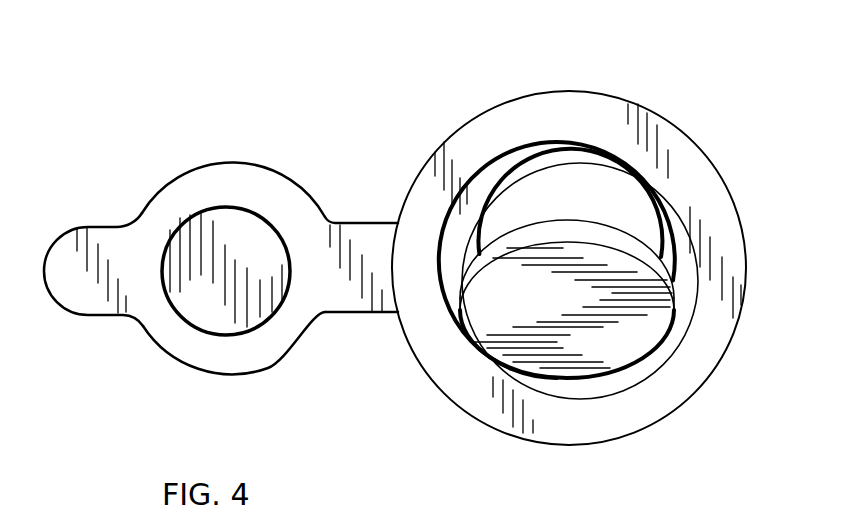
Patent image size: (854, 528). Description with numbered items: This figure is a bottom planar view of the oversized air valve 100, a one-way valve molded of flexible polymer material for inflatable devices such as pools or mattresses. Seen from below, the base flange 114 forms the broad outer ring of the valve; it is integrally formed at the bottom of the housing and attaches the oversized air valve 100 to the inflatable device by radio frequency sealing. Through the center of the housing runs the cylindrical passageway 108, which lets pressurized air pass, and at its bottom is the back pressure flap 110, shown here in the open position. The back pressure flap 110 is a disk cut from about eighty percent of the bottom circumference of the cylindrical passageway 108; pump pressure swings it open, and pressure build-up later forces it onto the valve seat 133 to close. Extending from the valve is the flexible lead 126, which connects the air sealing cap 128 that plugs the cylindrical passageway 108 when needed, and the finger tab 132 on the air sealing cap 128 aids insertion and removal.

The oversized air valve 100 is at (451, 86).
The cylindrical passageway 108 is at (592, 194).
The back pressure flap 110 is at (624, 234).
The base flange 114 is at (653, 395).
The flexible lead 126 is at (356, 222).
The air sealing cap 128 is at (227, 188).
The finger tab 132 is at (103, 236).
The valve seat 133 is at (571, 171).